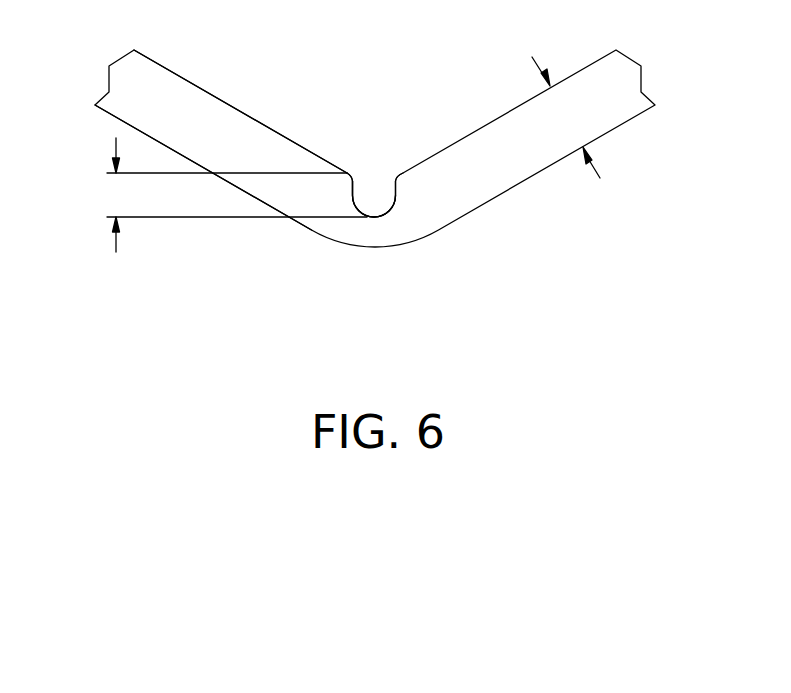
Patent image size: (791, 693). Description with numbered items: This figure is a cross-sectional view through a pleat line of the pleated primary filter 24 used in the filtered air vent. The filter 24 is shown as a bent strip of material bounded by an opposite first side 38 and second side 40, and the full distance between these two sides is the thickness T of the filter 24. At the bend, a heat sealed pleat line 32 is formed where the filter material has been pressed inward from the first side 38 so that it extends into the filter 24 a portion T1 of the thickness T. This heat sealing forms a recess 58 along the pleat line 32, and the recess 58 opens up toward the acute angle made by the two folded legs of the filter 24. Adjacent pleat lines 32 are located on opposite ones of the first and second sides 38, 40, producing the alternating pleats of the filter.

The pleated primary filter 24 is at (592, 63).
The first side 38 is at (203, 90).
The second side 40 is at (112, 115).
The heat sealed pleat line 32 is at (390, 175).
The recess 58 is at (373, 193).
The portion of the thickness T1 is at (234, 195).
The thickness of the filter T is at (575, 135).